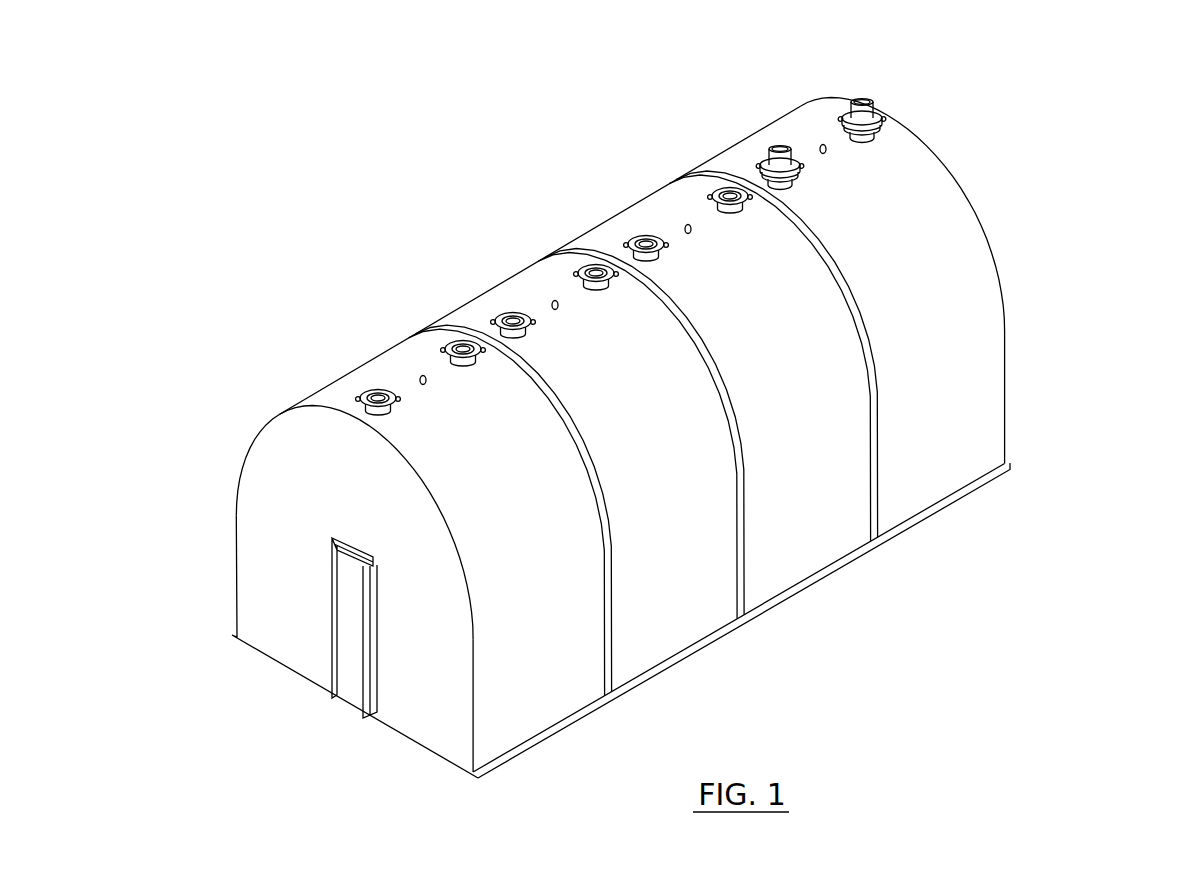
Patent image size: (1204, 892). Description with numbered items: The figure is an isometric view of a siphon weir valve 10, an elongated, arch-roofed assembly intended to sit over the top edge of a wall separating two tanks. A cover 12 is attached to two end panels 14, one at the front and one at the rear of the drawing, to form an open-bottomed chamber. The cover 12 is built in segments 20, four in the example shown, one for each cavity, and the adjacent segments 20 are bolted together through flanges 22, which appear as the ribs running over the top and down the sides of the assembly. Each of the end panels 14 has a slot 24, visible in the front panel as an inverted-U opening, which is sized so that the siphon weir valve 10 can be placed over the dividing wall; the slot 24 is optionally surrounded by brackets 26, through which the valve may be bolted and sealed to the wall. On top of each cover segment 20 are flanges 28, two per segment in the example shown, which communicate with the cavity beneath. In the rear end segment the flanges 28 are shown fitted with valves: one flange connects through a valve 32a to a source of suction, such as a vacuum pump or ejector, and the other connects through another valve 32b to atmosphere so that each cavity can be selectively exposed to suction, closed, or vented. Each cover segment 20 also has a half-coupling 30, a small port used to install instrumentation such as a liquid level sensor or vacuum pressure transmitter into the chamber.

The siphon weir valve 10 is at (661, 423).
The cover 12 is at (607, 438).
The end panels 14 is at (239, 577).
The segments 20 is at (925, 213).
The flanges 22 is at (683, 176).
The slot 24 is at (359, 667).
The brackets 26 is at (377, 618).
The flanges 28 is at (515, 314).
The half-coupling 30 is at (557, 311).
The valve 32a is at (781, 142).
The valve 32b is at (868, 100).